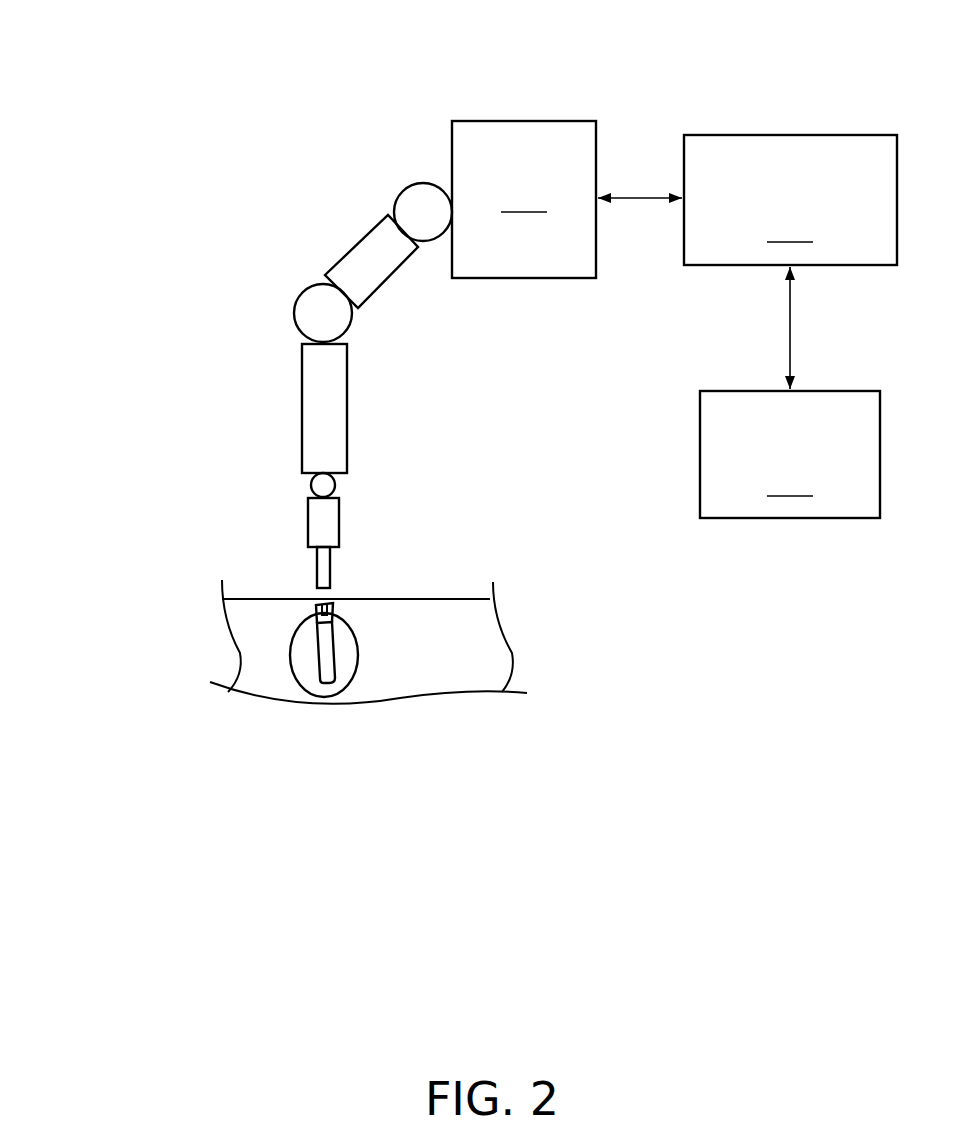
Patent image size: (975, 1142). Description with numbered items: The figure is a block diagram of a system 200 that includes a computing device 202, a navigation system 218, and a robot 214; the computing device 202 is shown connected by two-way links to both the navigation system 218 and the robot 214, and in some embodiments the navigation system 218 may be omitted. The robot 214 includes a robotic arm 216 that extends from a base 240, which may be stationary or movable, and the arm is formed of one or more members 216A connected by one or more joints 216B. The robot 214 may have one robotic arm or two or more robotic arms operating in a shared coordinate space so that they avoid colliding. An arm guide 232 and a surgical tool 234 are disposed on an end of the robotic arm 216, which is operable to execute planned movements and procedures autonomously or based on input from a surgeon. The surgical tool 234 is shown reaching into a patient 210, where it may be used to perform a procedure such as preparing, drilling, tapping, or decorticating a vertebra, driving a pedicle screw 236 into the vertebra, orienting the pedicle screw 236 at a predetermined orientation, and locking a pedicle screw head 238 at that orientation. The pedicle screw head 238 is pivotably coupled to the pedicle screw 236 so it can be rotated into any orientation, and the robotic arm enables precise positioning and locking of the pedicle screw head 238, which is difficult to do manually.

The system 200 is at (138, 80).
The robot 214 is at (402, 64).
The robotic arm 216 is at (257, 127).
The members 216A is at (355, 245).
The joints 216B is at (398, 193).
The arm guide 232 is at (308, 523).
The surgical tool 234 is at (317, 569).
The base 240 is at (358, 665).
The computing device 202 is at (790, 200).
The navigation system 218 is at (790, 454).
The patient 210 is at (217, 629).
The pedicle screw 236 is at (332, 650).
The pedicle screw head 238 is at (334, 609).